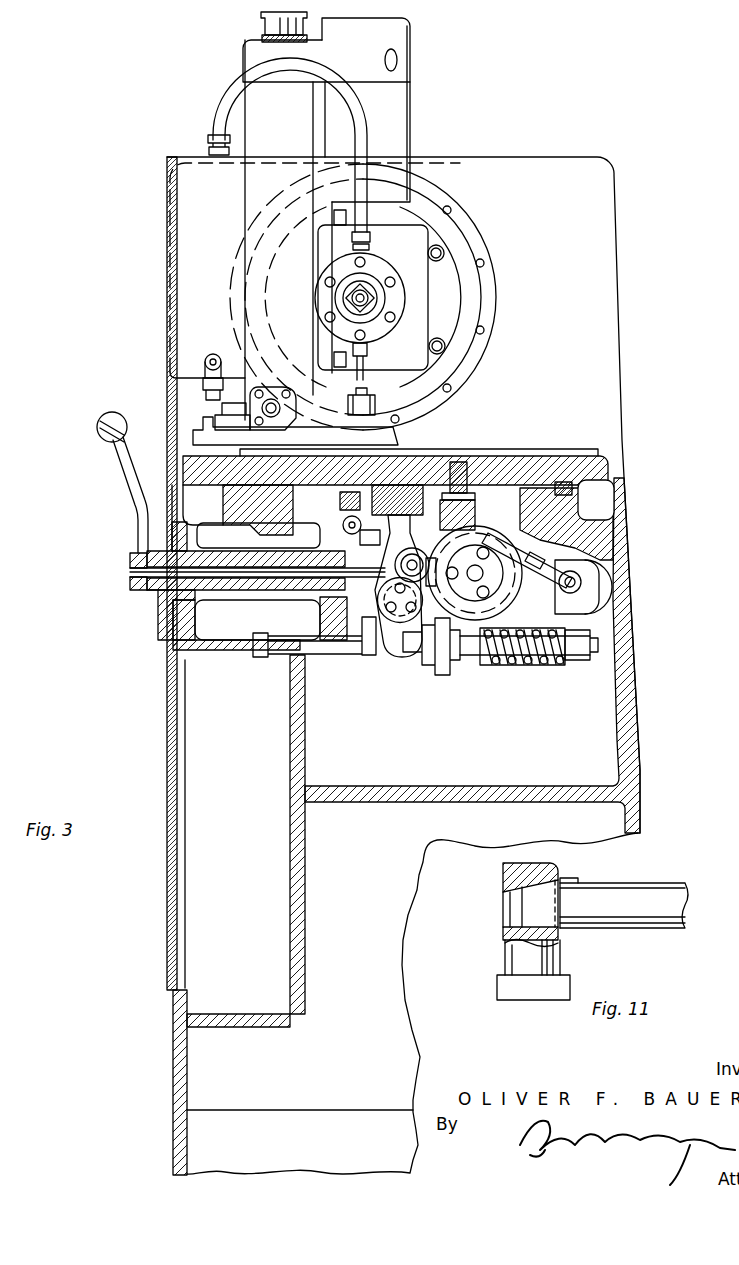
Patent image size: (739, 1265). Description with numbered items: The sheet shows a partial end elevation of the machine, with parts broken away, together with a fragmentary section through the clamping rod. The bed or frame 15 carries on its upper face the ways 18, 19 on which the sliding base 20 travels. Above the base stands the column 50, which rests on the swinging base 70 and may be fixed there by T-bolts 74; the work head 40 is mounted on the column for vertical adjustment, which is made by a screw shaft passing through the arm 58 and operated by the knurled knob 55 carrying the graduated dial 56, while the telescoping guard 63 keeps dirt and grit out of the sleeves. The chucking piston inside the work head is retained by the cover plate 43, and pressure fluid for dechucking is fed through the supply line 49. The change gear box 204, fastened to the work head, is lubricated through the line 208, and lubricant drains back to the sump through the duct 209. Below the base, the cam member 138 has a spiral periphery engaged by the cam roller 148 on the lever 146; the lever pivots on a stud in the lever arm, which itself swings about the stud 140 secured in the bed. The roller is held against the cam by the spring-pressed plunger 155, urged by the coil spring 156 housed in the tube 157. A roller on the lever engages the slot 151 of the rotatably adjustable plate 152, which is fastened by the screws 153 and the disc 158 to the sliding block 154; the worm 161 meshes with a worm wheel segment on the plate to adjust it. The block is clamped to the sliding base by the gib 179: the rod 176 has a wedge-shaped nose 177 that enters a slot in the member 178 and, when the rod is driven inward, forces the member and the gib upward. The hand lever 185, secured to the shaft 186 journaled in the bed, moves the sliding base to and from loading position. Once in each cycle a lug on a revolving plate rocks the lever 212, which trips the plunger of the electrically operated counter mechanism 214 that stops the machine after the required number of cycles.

In FIG. 3, the bed or frame 15 is at (630, 758).
In FIG. 3, the way 18 is at (243, 503).
In FIG. 3, the way 19 is at (530, 505).
In FIG. 3, the sliding base 20 is at (536, 461).
In FIG. 3, the work head 40 is at (421, 310).
In FIG. 3, the cover plate 43 is at (372, 269).
In FIG. 3, the supply line 49 is at (366, 380).
In FIG. 3, the column 50 is at (250, 192).
In FIG. 3, the knurled knob 55 is at (262, 24).
In FIG. 3, the graduated dial 56 is at (262, 38).
In FIG. 3, the arm 58 is at (252, 57).
In FIG. 3, the telescoping guard 63 is at (398, 124).
In FIG. 3, the swinging base 70 is at (396, 436).
In FIG. 3, the T-bolts 74 is at (214, 409).
In FIG. 3, the cam member 138 is at (490, 612).
In FIG. 3, the stud 140 is at (336, 641).
In FIG. 3, the lever 146 is at (379, 600).
In FIG. 3, the cam roller 148 is at (388, 548).
In FIG. 3, the slot 151 is at (442, 525).
In FIG. 3, the rotatably adjustable plate 152 is at (360, 538).
In FIG. 3, the screws 153 is at (426, 470).
In FIG. 3, the sliding block 154 is at (347, 519).
In FIG. 3, the spring-pressed plunger 155 is at (512, 668).
In FIG. 3, the coil spring 156 is at (542, 666).
In FIG. 3, the tube 157 is at (479, 668).
In FIG. 3, the disc 158 is at (398, 485).
In FIG. 3, the worm 161 is at (330, 536).
In FIG. 11, the rod 176 is at (628, 930).
In FIG. 11, the tapered or wedge-shaped nose 177 is at (518, 904).
In FIG. 3, the member 178 is at (470, 492).
In FIG. 11, the member 178 is at (515, 953).
In FIG. 3, the gib 179 is at (345, 504).
In FIG. 3, the hand lever 185 is at (122, 472).
In FIG. 3, the shaft 186 is at (230, 578).
In FIG. 3, the change gear box 204 is at (182, 277).
In FIG. 3, the line 208 is at (316, 73).
In FIG. 3, the duct 209 is at (207, 378).
In FIG. 3, the lever 212 is at (500, 539).
In FIG. 3, the electrically operated counter mechanism 214 is at (590, 583).